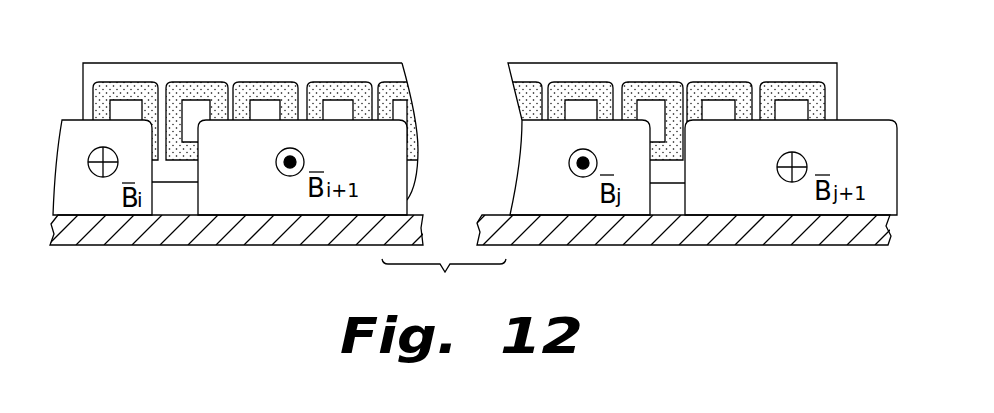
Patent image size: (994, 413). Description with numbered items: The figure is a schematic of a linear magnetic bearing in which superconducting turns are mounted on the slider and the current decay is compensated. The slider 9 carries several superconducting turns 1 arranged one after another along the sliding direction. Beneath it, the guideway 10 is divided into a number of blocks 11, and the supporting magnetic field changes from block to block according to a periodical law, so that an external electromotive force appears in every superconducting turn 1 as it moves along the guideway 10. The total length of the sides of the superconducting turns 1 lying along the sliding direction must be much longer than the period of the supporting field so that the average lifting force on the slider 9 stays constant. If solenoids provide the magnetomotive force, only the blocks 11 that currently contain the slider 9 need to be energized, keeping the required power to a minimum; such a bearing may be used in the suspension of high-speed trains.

The superconducting turns 1 is at (192, 97).
The slider 9 is at (270, 63).
The guideway 10 is at (222, 247).
The blocks 11 is at (350, 150).